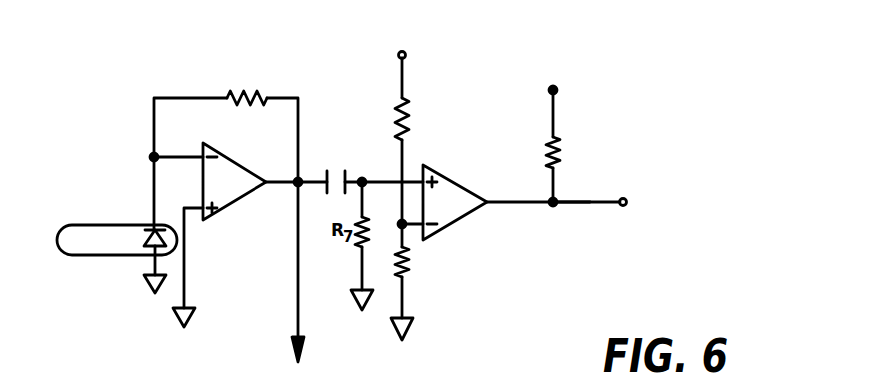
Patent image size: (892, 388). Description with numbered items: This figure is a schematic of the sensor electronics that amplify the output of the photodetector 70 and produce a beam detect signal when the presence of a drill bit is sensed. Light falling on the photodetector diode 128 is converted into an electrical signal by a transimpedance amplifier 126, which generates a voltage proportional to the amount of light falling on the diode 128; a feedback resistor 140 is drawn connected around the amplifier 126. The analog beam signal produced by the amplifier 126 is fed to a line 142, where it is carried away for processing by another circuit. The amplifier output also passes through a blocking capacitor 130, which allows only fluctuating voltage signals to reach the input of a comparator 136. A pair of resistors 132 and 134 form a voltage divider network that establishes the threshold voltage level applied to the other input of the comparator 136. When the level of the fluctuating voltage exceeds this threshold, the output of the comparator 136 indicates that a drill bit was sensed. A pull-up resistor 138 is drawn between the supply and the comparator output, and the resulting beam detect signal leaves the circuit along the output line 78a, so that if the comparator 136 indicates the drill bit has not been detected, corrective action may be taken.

The photodetector 70 is at (108, 225).
The photodetector diode 128 is at (117, 225).
The transimpedance amplifier 126 is at (214, 235).
The feedback resistor R1 140 is at (226, 116).
The blocking capacitor 130 is at (344, 164).
The line 142 is at (298, 255).
The resistor 132 is at (428, 135).
The resistor 134 is at (426, 280).
The comparator 136 is at (590, 219).
The pull-up resistor R4 138 is at (579, 143).
The beam detect signal line 78a is at (577, 207).